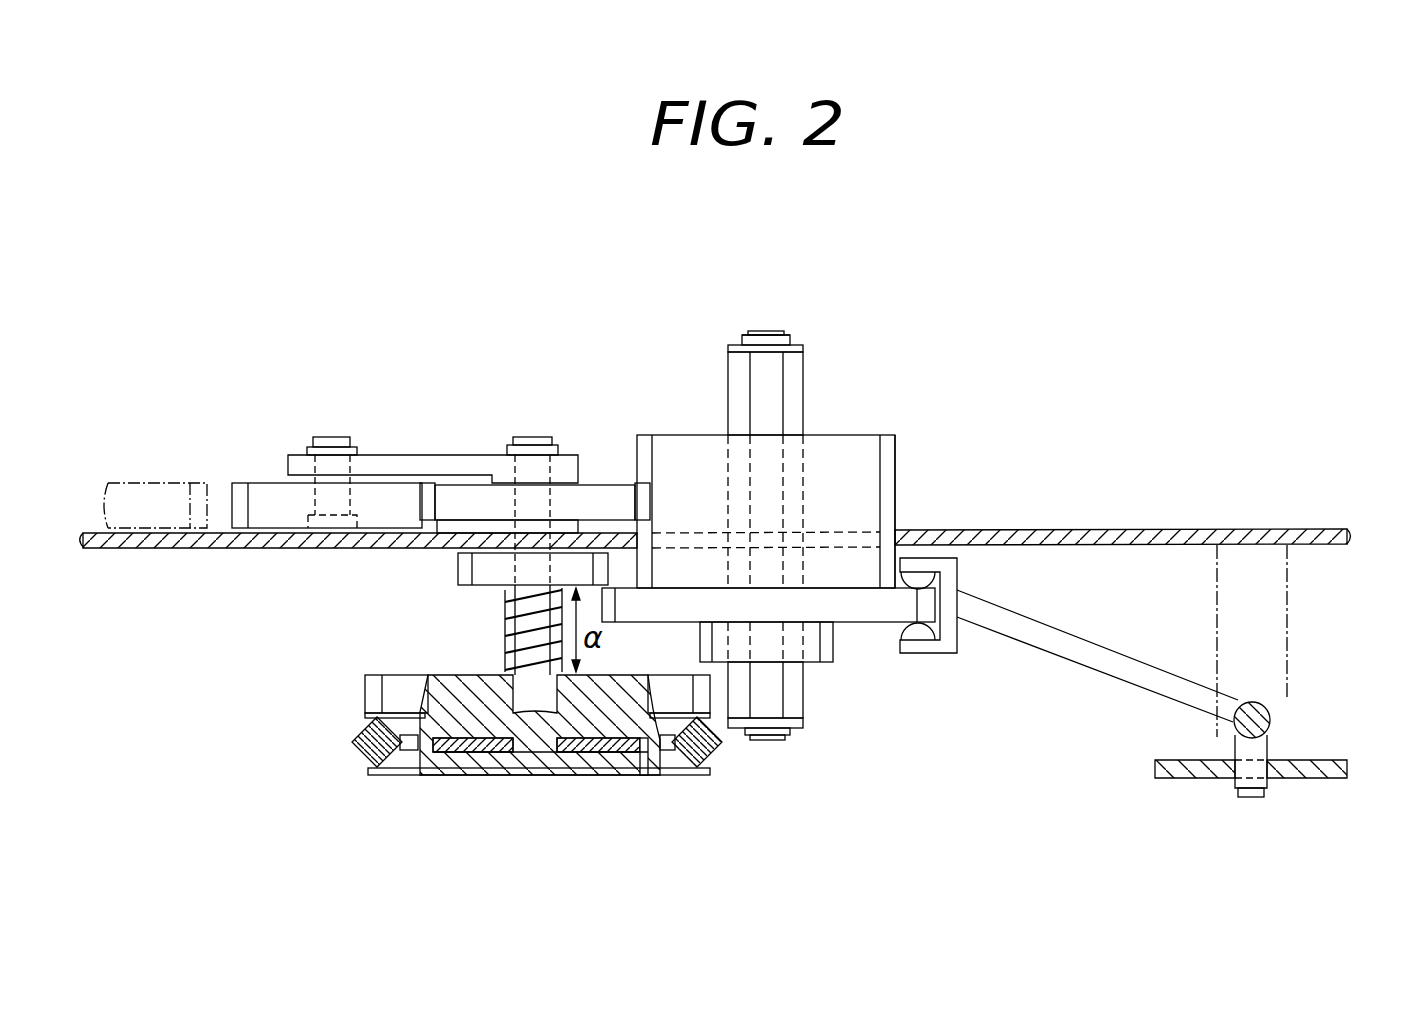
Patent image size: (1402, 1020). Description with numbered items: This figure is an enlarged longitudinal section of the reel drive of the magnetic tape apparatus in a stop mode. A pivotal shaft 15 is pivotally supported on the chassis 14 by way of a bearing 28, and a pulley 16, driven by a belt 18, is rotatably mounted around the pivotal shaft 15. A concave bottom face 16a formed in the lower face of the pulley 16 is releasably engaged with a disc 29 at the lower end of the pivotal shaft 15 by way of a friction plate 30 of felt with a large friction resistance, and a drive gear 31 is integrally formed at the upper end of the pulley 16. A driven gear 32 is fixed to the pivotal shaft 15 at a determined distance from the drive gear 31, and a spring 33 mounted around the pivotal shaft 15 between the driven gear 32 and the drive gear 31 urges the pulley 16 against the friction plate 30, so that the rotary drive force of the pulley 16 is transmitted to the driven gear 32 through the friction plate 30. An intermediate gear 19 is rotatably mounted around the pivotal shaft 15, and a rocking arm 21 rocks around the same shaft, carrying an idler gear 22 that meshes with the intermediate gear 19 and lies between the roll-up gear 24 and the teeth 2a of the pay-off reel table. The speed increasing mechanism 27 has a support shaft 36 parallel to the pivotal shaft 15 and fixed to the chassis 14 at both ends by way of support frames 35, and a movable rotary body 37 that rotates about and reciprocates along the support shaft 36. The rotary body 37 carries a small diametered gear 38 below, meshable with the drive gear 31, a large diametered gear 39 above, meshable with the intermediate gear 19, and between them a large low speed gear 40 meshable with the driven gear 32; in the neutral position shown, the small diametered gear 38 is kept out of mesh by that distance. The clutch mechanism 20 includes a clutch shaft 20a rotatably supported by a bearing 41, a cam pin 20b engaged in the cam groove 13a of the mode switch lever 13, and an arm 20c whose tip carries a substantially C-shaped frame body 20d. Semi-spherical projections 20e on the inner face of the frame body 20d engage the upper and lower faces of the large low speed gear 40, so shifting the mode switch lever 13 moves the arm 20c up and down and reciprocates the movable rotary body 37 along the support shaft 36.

The teeth 2a is at (198, 483).
The roll-up gear 24 is at (157, 455).
The mode switch lever 13 is at (1206, 813).
The cam groove 13a is at (1235, 785).
The chassis 14 is at (1115, 530).
The pivotal shaft 15 is at (530, 437).
The pulley 16 is at (539, 772).
The concave bottom face 16a is at (470, 778).
The belt 18 is at (352, 758).
The intermediate gear 19 is at (600, 485).
The clutch mechanism 20 is at (1150, 663).
The clutch shaft 20a is at (1265, 705).
The cam pin 20b is at (1255, 800).
The arm 20c is at (1135, 660).
The frame body 20d is at (955, 565).
The semi-spherical projections 20e is at (920, 575).
The rocking arm 21 is at (400, 455).
The idler gear 22 is at (268, 483).
The speed increasing mechanism 27 is at (807, 333).
The bearing 28 is at (498, 523).
The disc 29 is at (570, 776).
The friction plate 30 is at (620, 776).
The drive gear 31 is at (715, 758).
The driven gear 32 is at (458, 588).
The spring 33 is at (505, 633).
The support frames 35 is at (728, 348).
The support shaft 36 is at (773, 387).
The movable rotary body 37 is at (862, 422).
The small diametered gear 38 is at (840, 665).
The large diametered gear 39 is at (897, 455).
The large low speed gear 40 is at (885, 615).
The bearing 41 is at (1283, 592).